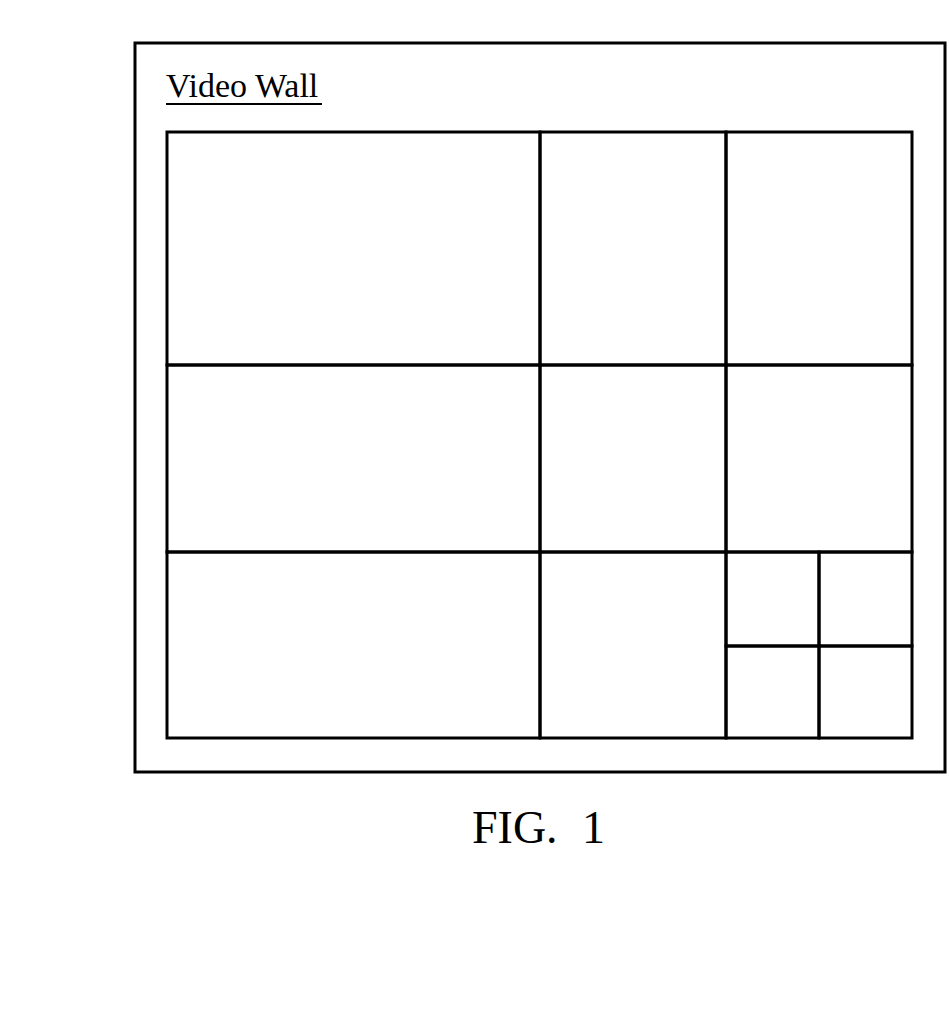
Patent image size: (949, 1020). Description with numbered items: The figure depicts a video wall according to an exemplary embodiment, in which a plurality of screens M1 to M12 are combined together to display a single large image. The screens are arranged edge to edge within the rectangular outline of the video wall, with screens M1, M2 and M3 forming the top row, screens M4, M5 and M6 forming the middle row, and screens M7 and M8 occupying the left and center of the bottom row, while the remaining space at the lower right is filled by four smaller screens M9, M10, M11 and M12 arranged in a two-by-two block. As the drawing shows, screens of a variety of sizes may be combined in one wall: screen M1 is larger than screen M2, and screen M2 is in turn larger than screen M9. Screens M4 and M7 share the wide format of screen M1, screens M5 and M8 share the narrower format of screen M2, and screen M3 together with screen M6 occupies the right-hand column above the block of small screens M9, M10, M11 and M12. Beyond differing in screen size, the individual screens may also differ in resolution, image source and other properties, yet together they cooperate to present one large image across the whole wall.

The screen M1 is at (378, 263).
The screen M2 is at (657, 263).
The screen M3 is at (843, 263).
The screen M4 is at (378, 475).
The screen M5 is at (657, 475).
The screen M6 is at (843, 475).
The screen M7 is at (378, 662).
The screen M8 is at (657, 662).
The screen M9 is at (796, 615).
The screen M10 is at (833, 615).
The screen M11 is at (741, 710).
The screen M12 is at (833, 710).